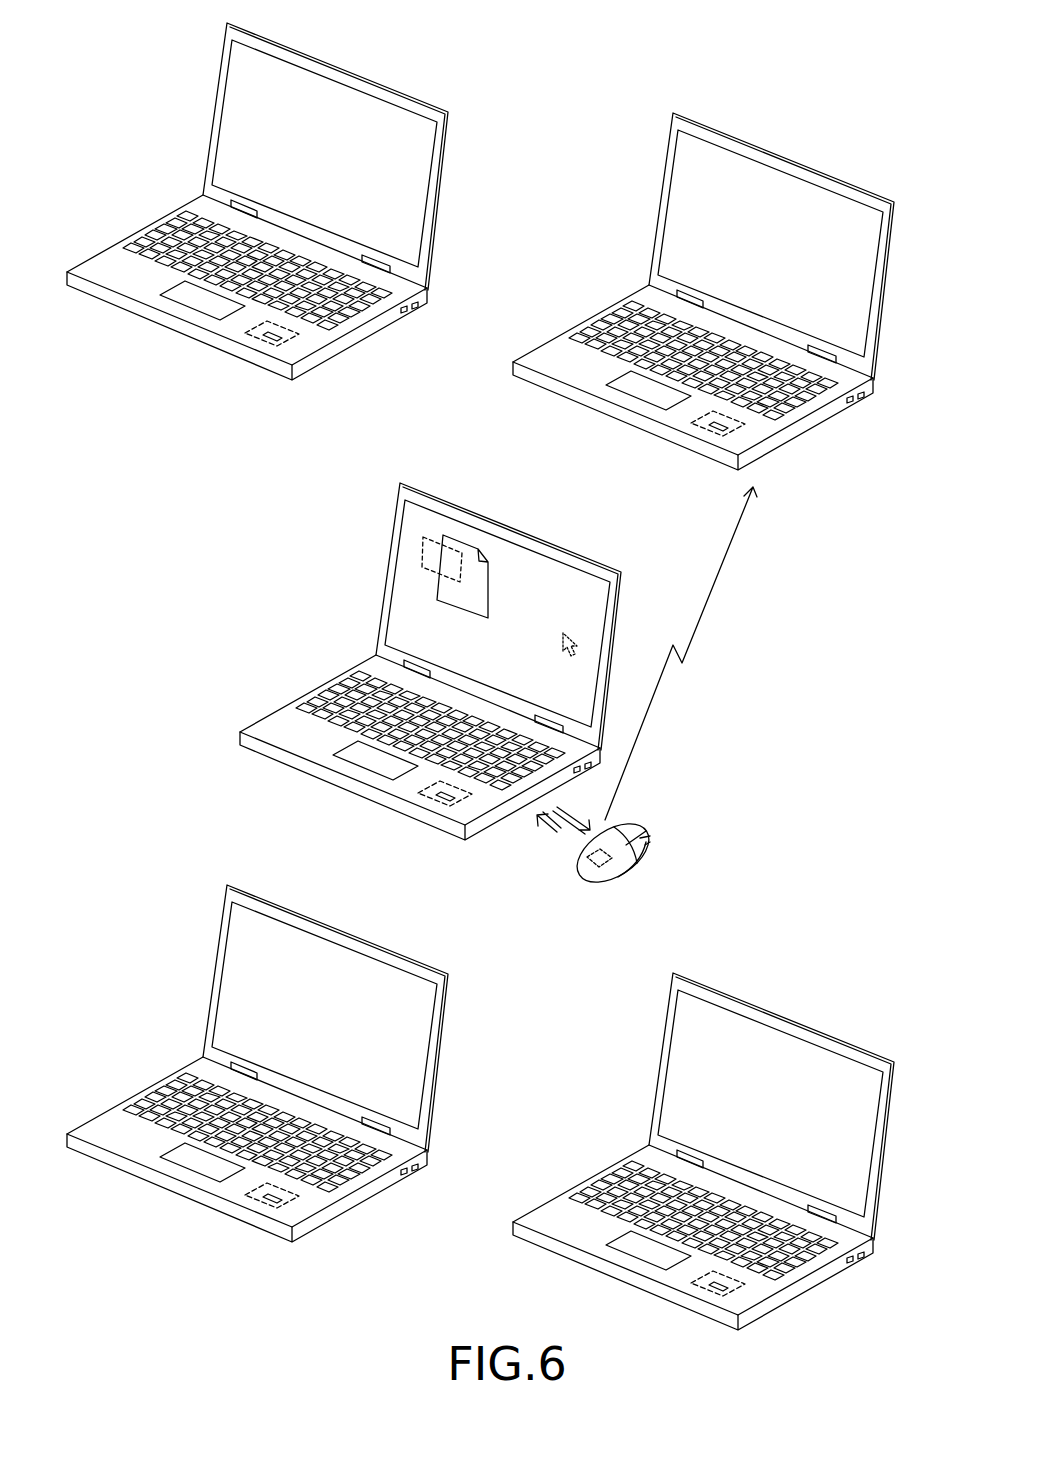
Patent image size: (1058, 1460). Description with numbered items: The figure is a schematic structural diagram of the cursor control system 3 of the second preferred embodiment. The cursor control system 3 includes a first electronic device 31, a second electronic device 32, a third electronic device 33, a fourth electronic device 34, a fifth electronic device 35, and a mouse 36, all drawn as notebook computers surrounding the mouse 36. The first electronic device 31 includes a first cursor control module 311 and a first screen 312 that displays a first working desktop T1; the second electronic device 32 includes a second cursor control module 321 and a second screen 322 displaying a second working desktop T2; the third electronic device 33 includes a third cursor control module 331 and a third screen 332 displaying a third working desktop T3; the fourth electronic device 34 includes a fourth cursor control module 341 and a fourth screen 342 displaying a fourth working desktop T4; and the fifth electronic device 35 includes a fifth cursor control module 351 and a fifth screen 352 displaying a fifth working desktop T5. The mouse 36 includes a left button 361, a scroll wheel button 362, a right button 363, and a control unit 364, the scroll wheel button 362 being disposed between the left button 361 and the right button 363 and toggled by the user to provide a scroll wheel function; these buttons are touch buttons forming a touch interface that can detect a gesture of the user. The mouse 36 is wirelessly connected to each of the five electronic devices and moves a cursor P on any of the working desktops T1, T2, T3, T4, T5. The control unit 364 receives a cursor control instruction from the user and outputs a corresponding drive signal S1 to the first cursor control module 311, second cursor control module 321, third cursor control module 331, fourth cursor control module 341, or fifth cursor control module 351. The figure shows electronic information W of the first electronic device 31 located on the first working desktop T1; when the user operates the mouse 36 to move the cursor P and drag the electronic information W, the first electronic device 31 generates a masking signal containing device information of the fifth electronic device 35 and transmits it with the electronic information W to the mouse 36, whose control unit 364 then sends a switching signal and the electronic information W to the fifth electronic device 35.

The cursor control system 3 is at (744, 30).
The first electronic device 31 is at (451, 666).
The first cursor control module 311 is at (426, 821).
The first screen 312 is at (519, 616).
The second electronic device 32 is at (278, 1068).
The second cursor control module 321 is at (253, 1223).
The second screen 322 is at (346, 1018).
The third electronic device 33 is at (278, 206).
The third cursor control module 331 is at (253, 361).
The third screen 332 is at (346, 156).
The fourth electronic device 34 is at (724, 1156).
The fourth cursor control module 341 is at (699, 1311).
The fourth screen 342 is at (792, 1106).
The fifth electronic device 35 is at (724, 296).
The fifth cursor control module 351 is at (699, 451).
The fifth screen 352 is at (792, 246).
The mouse 36 is at (625, 895).
The left button 361 is at (618, 825).
The scroll wheel button 362 is at (637, 833).
The right button 363 is at (645, 845).
The control unit 364 is at (584, 870).
The first working desktop T1 is at (472, 613).
The second working desktop T2 is at (299, 1015).
The third working desktop T3 is at (299, 153).
The fourth working desktop T4 is at (745, 1103).
The fifth working desktop T5 is at (745, 243).
The electronic information W is at (471, 601).
The cursor P is at (544, 624).
The drive signal S1 is at (537, 838).